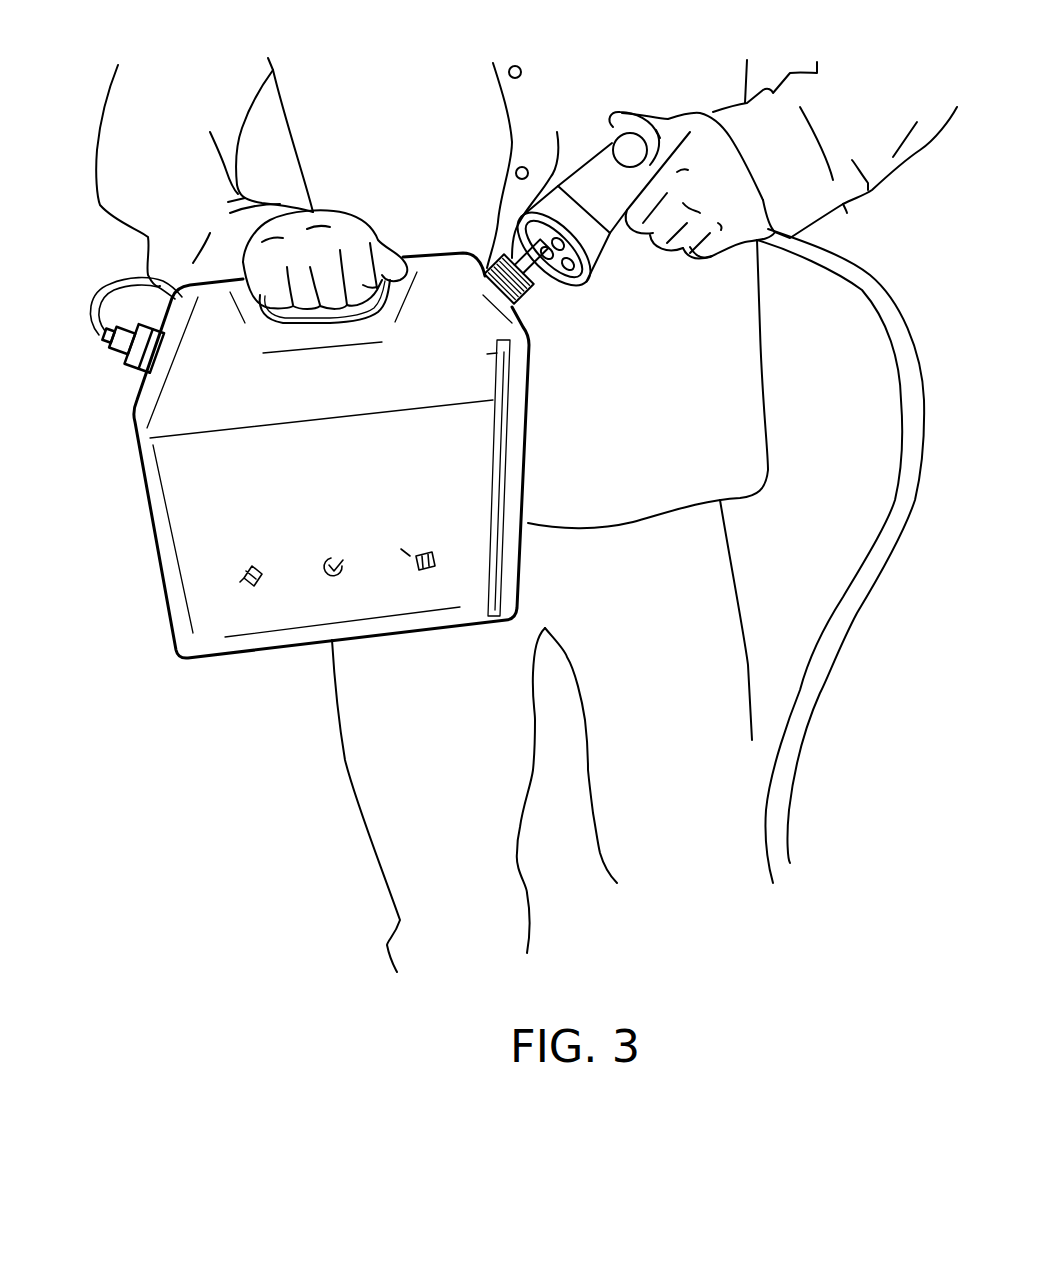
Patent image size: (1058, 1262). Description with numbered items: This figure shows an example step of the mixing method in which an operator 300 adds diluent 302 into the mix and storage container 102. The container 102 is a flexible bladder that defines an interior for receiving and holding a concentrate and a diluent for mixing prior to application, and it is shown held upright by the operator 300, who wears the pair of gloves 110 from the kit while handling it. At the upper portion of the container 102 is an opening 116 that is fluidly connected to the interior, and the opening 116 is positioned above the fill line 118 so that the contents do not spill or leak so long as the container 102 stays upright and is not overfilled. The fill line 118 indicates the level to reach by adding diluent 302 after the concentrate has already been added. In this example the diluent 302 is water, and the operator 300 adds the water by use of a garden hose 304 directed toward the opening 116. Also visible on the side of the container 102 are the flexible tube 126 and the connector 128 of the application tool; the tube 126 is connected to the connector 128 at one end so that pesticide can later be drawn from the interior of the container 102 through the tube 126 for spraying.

The mix and storage container 102 is at (533, 338).
The pair of gloves 110 is at (350, 210).
The opening 116 is at (485, 258).
The fill line 118 is at (503, 353).
The flexible tube 126 is at (107, 303).
The connector 128 is at (126, 374).
The operator 300 is at (95, 143).
The diluent 302 is at (557, 132).
The garden hose 304 is at (880, 273).